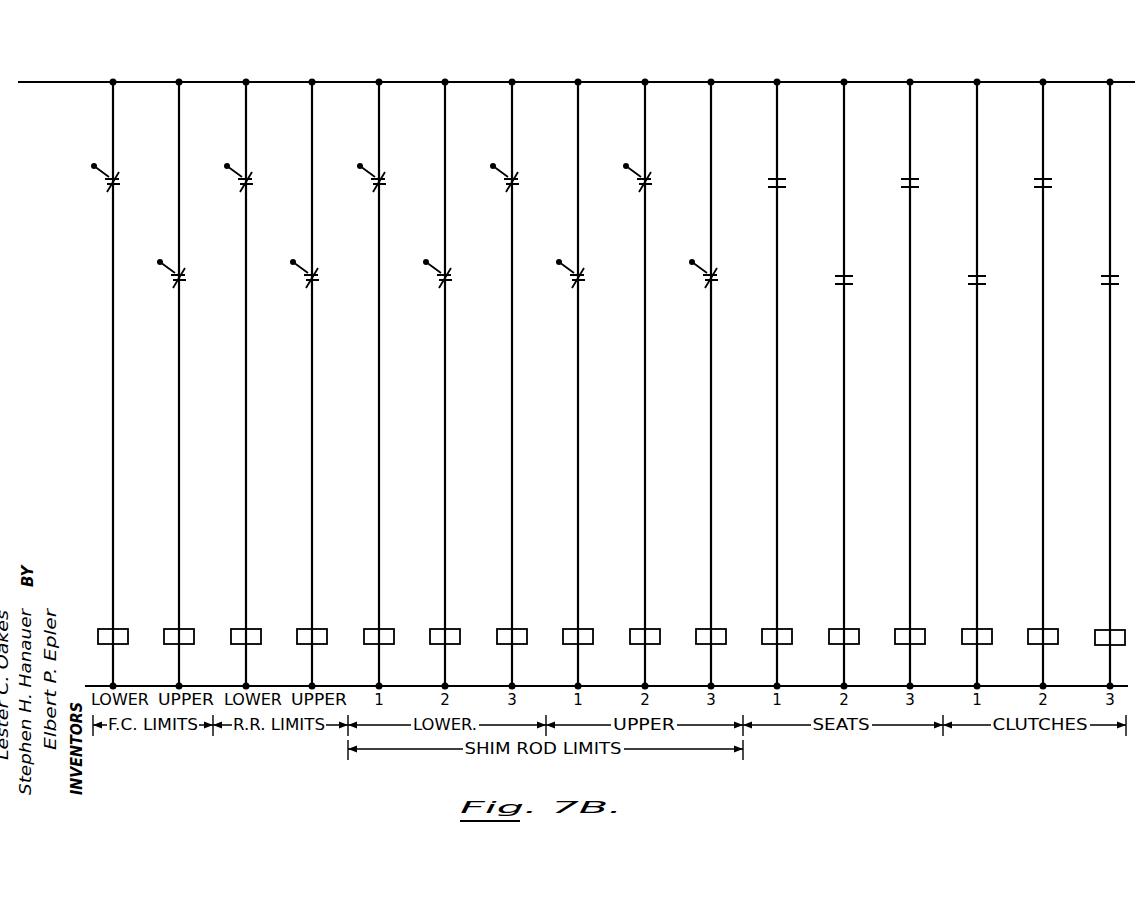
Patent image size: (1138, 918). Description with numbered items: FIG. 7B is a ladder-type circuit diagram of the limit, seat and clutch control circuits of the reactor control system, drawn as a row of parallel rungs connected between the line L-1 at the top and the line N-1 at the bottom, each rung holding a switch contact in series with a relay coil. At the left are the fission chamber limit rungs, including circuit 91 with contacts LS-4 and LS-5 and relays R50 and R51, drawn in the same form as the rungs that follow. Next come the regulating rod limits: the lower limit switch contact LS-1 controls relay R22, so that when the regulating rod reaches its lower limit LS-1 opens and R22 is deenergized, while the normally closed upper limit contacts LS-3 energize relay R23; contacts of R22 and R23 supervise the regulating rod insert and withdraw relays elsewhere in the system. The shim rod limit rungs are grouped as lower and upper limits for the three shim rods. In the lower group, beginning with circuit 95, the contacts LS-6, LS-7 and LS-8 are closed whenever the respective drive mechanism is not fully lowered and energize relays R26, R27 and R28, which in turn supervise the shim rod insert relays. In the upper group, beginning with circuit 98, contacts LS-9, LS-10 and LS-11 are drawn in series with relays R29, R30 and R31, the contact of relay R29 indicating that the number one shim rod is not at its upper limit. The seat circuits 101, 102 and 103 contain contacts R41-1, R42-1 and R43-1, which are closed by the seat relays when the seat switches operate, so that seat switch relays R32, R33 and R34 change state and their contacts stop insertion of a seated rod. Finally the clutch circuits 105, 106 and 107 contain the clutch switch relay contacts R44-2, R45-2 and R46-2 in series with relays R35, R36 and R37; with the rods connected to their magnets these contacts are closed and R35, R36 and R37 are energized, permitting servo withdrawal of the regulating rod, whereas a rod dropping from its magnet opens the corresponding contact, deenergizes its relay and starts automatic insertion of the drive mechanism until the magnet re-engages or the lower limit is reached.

The F.C. lower limit circuit rung 91 is at (126, 384).
The shim rod lower limit circuit rung 95 is at (392, 384).
The shim rod upper limit circuit rung 98 is at (591, 384).
The seat switch relay circuit 101 is at (798, 384).
The seat switch relay circuit 102 is at (865, 384).
The seat switch relay circuit 103 is at (931, 384).
The clutch circuit 105 is at (998, 384).
The clutch circuit 106 is at (1064, 384).
The clutch circuit 107 is at (1087, 384).
The supply line L-1 is at (536, 82).
The neutral line N-1 is at (593, 686).
The regulating rod lower limit switch contact LS-1 is at (246, 186).
The regulating rod upper limit switch contacts LS-3 is at (312, 282).
The limit switch LS-4 is at (113, 186).
The limit switch LS-5 is at (179, 282).
The shim rod lower limit switch contact LS-6 is at (379, 186).
The shim rod lower limit switch contact LS-7 is at (445, 282).
The shim rod lower limit switch contact LS-8 is at (512, 186).
The limit switch LS-9 is at (578, 282).
The limit switch LS-10 is at (645, 186).
The limit switch LS-11 is at (711, 282).
The relay coil R50 is at (115, 629).
The relay coil R51 is at (181, 629).
The regulating rod lower limit relay R22 is at (248, 629).
The regulating rod upper limit relay R23 is at (314, 629).
The shim rod lower limit switch relay R26 is at (381, 629).
The shim rod lower limit switch relay R27 is at (447, 629).
The shim rod lower limit switch relay R28 is at (514, 629).
The shim rod upper limit relay R29 is at (580, 629).
The relay coil R30 is at (647, 629).
The relay coil R31 is at (713, 629).
The seat switch relay R32 is at (779, 629).
The seat switch relay R33 is at (846, 629).
The seat switch relay R34 is at (912, 629).
The clutch switch relay R35 is at (979, 629).
The clutch switch relay R36 is at (1045, 629).
The clutch switch relay R37 is at (1102, 646).
The seat relay contact R41-1 is at (780, 177).
The seat relay contact R42-1 is at (847, 274).
The seat relay contact R43-1 is at (913, 177).
The clutch switch relay contact R44-2 is at (980, 274).
The clutch switch relay contact R45-2 is at (1046, 177).
The clutch switch relay contact R46-2 is at (1107, 278).